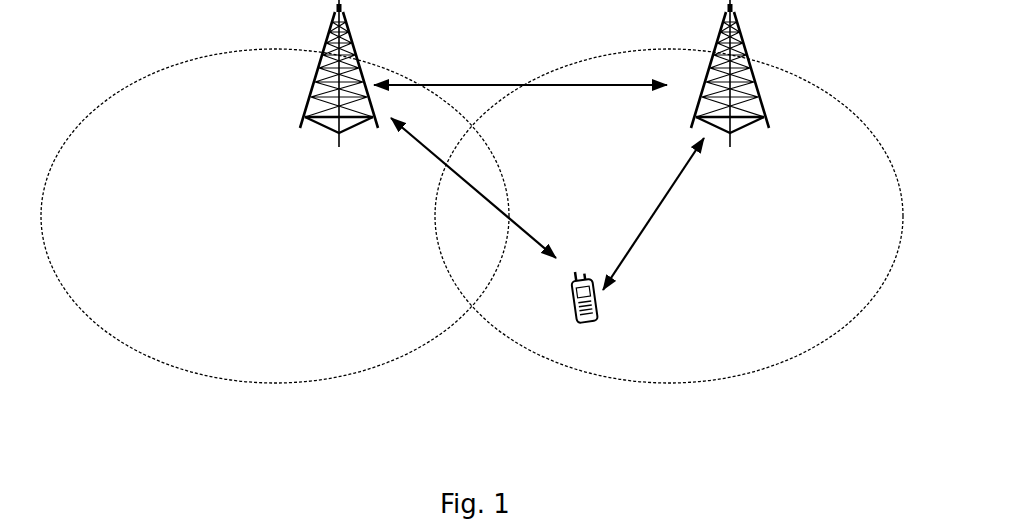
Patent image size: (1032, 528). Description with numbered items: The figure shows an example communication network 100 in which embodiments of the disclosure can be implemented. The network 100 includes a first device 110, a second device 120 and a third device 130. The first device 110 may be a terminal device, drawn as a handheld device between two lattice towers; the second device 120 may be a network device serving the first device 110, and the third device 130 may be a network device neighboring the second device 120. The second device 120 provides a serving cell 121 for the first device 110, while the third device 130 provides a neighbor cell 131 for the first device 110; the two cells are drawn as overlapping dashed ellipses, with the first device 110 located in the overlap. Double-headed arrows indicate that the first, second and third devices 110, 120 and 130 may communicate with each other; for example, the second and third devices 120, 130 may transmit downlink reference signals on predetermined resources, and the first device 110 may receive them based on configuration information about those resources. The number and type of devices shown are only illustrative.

The communication network 100 is at (122, 40).
The first device 110 is at (571, 303).
The second device 120 is at (748, 48).
The serving cell 121 is at (604, 378).
The third device 130 is at (357, 50).
The neighbor cell 131 is at (148, 355).